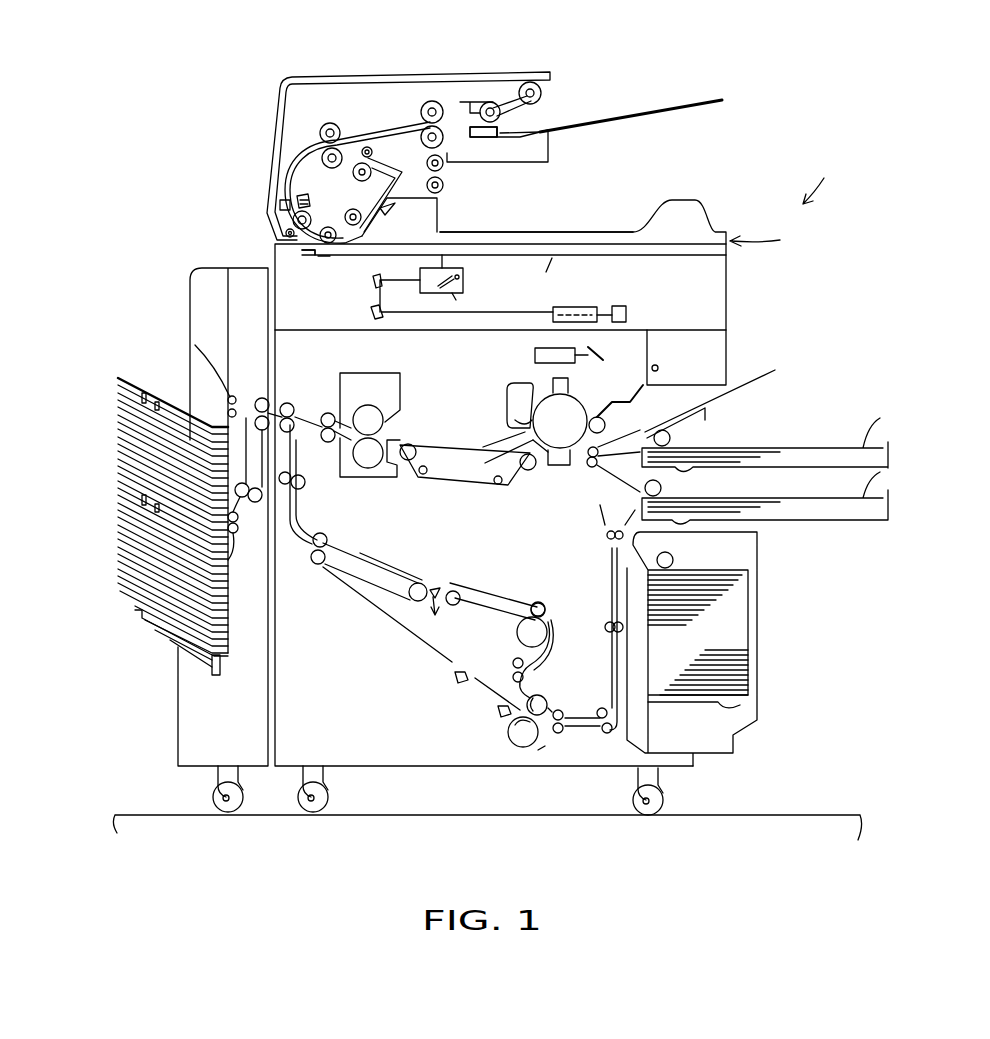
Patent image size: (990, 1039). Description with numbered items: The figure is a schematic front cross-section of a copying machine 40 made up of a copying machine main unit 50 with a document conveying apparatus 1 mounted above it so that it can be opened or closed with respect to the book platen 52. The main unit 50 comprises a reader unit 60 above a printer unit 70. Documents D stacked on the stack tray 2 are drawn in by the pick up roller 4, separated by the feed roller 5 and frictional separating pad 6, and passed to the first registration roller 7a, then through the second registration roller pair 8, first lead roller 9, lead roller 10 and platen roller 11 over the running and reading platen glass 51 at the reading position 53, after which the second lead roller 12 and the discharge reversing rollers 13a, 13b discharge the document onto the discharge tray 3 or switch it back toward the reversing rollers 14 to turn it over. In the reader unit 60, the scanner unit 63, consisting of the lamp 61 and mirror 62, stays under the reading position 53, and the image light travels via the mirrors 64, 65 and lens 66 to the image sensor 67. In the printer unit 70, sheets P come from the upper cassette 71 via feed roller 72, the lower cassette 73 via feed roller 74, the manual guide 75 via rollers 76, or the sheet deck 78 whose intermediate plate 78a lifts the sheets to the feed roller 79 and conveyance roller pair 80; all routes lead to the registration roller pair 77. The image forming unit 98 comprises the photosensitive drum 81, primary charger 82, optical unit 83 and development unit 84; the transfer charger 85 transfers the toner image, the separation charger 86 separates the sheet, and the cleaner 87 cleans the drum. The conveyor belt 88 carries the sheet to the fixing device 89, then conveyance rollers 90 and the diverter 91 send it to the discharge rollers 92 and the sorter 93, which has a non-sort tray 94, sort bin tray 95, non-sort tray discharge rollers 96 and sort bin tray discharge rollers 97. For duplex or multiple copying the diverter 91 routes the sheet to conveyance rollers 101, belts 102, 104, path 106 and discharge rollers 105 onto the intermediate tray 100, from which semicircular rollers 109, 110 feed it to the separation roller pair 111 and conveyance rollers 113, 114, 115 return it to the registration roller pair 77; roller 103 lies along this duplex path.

The document conveying apparatus 1 is at (536, 446).
The stack tray 2 is at (408, 157).
The discharge tray 3 is at (532, 231).
The pick up roller 4 is at (530, 82).
The feed roller 5 is at (490, 101).
The frictional separating pad 6 is at (490, 138).
The first registration roller 7a is at (430, 101).
The second registration roller pair 8 is at (338, 126).
The first lead roller 9 is at (283, 205).
The lead roller 10 is at (286, 229).
The platen roller 11 is at (328, 225).
The second lead roller 12 is at (352, 212).
The discharge reversing roller 13a is at (443, 168).
The discharge reversing roller 13b is at (442, 192).
The reversing rollers 14 is at (380, 206).
The copying machine 40 is at (842, 172).
The copying machine main unit 50 is at (808, 268).
The running and reading platen glass 51 is at (314, 258).
The book platen 52 is at (547, 272).
The reading position 53 is at (328, 260).
The reader unit 60 is at (741, 292).
The lamp 61 is at (465, 268).
The mirror 62 is at (465, 284).
The scanner unit 63 is at (464, 306).
The mirror 64 is at (374, 280).
The mirror 65 is at (374, 316).
The lens 66 is at (574, 306).
The image sensor 67 is at (622, 306).
The printer unit 70 is at (741, 347).
The upper cassette 71 is at (893, 448).
The feed roller 72 is at (699, 441).
The lower cassette 73 is at (893, 508).
The feed roller 74 is at (705, 480).
The manual guide 75 is at (767, 377).
The rollers 76 is at (660, 372).
The registration roller pair 77 is at (592, 468).
The sheet deck 78 is at (750, 632).
The intermediate plate 78a is at (740, 705).
The feed roller 79 is at (675, 558).
The conveyance roller pair 80 is at (607, 538).
The photosensitive drum 81 is at (540, 392).
The primary charger 82 is at (468, 458).
The optical unit 83 is at (535, 352).
The development unit 84 is at (600, 416).
The transfer charger 85 is at (560, 467).
The separation charger 86 is at (545, 455).
The cleaner 87 is at (515, 421).
The conveyor belt 88 is at (507, 410).
The fixing device 89 is at (365, 378).
The conveyance rollers 90 is at (306, 487).
The diverter 91 is at (326, 413).
The discharge rollers 92 is at (288, 402).
The sorter 93 is at (106, 441).
The non-sort tray 94 is at (130, 380).
The sort bin tray 95 is at (125, 500).
The non-sort tray discharge rollers 96 is at (230, 397).
The sort bin tray discharge rollers 97 is at (263, 557).
The image forming unit 98 is at (497, 384).
The intermediate tray 100 is at (360, 600).
The conveyance rollers 101 is at (333, 514).
The belt 102 is at (383, 560).
The conveying roller 103 is at (440, 580).
The belt 104 is at (500, 594).
The discharge rollers 105 is at (514, 660).
The path 106 is at (545, 662).
The semicircular roller 109 is at (457, 680).
The semicircular roller 110 is at (505, 713).
The separation roller pair 111 is at (547, 758).
The conveyance rollers 113 is at (565, 732).
The conveyance rollers 114 is at (603, 710).
The conveyance rollers 115 is at (609, 624).
The document D is at (587, 123).
The sheet P is at (888, 445).